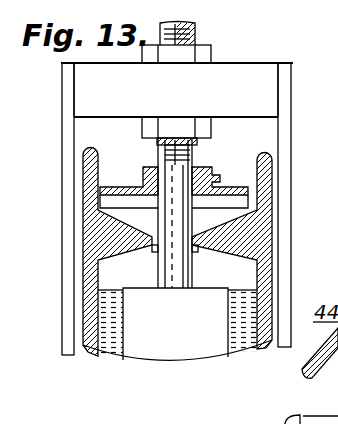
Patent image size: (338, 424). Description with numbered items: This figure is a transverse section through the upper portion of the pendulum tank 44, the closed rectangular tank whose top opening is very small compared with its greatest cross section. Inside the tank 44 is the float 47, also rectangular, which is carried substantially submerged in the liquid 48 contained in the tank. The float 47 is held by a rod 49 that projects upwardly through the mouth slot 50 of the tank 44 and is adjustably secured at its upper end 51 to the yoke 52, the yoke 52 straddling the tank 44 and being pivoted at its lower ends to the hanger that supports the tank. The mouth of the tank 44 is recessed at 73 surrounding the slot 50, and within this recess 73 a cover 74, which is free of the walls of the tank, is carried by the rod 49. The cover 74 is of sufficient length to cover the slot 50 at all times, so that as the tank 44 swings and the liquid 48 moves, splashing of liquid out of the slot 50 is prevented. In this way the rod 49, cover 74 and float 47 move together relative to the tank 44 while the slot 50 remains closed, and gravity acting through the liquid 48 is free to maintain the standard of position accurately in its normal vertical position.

The tank 44 is at (272, 272).
The float 47 is at (175, 324).
The liquid 48 is at (238, 290).
The rod 49 is at (196, 32).
The mouth slot 50 is at (147, 243).
The upper end of rod 51 is at (212, 52).
The yoke 52 is at (290, 125).
The recess 73 is at (245, 167).
The cover 74 is at (120, 185).